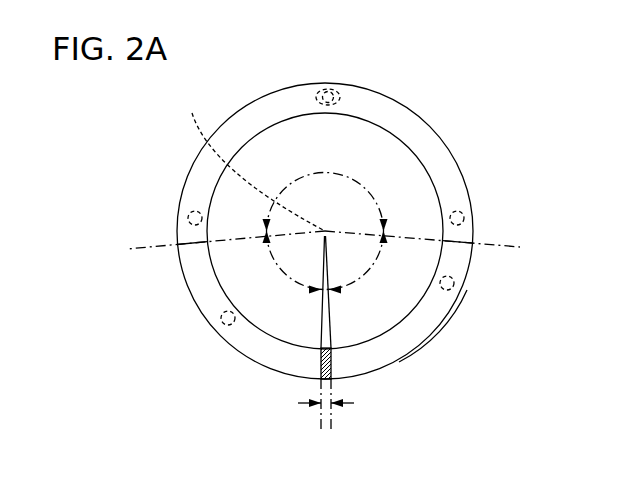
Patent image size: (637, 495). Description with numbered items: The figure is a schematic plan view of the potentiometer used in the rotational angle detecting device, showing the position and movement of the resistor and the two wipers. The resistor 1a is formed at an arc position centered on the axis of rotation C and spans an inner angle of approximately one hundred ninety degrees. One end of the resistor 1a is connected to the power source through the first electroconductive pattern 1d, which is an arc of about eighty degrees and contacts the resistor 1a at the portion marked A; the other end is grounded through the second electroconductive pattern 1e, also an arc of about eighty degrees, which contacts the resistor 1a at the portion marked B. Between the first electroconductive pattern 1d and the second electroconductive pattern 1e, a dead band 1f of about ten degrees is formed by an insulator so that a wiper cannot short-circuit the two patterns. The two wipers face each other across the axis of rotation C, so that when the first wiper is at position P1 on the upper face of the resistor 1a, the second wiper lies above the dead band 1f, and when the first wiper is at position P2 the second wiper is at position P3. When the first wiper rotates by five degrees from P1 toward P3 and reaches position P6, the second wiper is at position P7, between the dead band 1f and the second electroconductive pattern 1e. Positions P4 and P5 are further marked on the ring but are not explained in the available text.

The resistor 1a is at (438, 150).
The second electroconductive pattern 1e is at (200, 290).
The first electroconductive pattern 1d is at (418, 332).
The dead band 1f is at (333, 356).
The axis of rotation C is at (253, 162).
The contact portion between first electroconductive pattern and resistor A is at (457, 242).
The contact portion between second electroconductive pattern and resistor B is at (193, 243).
The position P1 is at (317, 97).
The position P2 is at (187, 215).
The position P3 is at (465, 216).
The position P4 is at (455, 290).
The position P5 is at (221, 321).
The position P6 is at (343, 97).
The position P7 is at (316, 362).